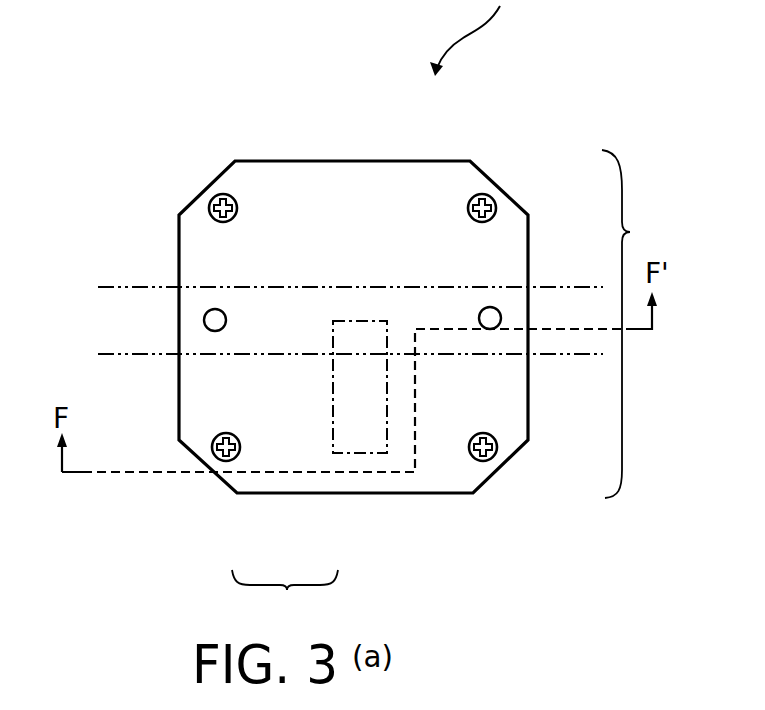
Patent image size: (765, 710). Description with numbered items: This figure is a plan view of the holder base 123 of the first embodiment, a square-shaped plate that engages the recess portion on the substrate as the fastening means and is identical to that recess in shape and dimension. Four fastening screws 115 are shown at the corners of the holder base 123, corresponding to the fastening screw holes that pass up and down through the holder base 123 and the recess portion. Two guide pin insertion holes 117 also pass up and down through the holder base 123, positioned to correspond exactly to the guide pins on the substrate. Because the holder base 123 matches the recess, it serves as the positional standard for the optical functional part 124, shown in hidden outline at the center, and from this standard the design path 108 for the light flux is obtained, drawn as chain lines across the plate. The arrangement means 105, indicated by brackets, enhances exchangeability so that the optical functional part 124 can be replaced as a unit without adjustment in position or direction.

The arrangement means 105 is at (456, 392).
The design path 108 is at (162, 285).
The fastening screws 115 is at (233, 197).
The guide pin insertion holes 117 is at (492, 308).
The holder base 123 is at (432, 160).
The optical functional part 124 is at (378, 455).